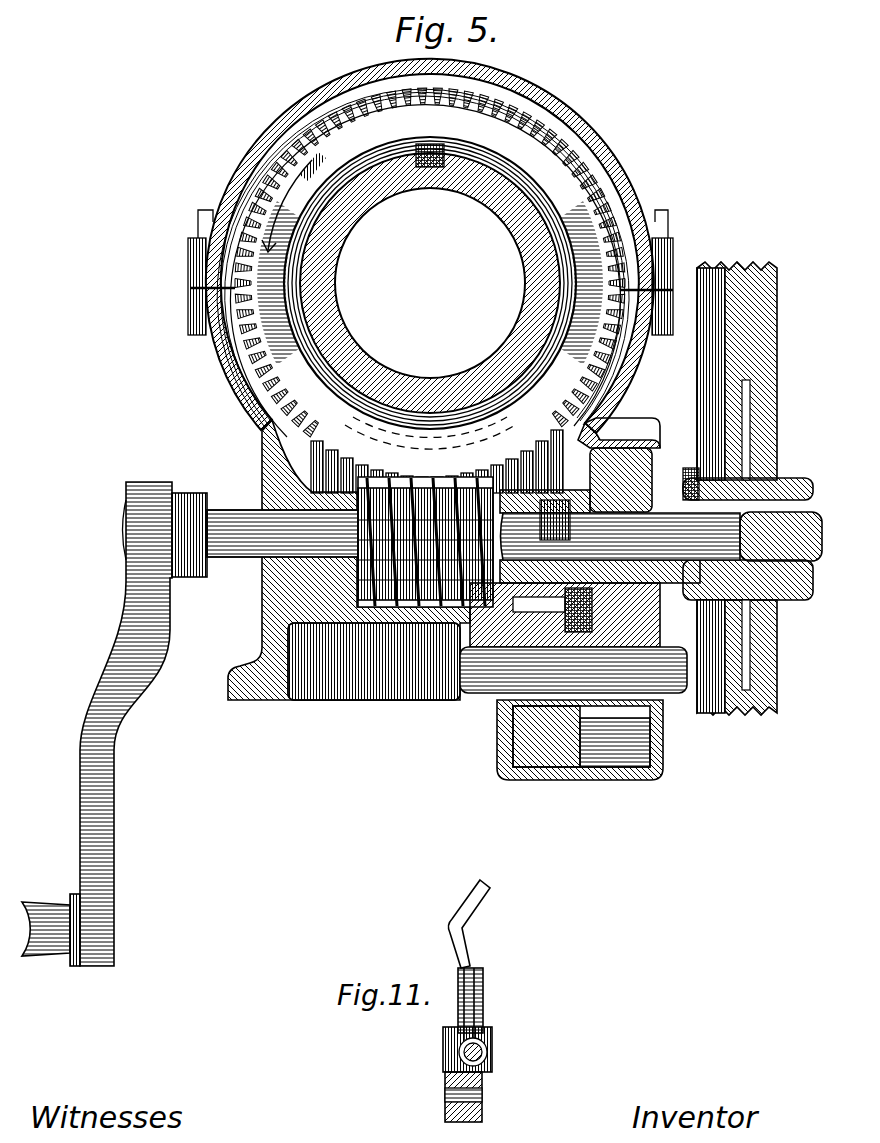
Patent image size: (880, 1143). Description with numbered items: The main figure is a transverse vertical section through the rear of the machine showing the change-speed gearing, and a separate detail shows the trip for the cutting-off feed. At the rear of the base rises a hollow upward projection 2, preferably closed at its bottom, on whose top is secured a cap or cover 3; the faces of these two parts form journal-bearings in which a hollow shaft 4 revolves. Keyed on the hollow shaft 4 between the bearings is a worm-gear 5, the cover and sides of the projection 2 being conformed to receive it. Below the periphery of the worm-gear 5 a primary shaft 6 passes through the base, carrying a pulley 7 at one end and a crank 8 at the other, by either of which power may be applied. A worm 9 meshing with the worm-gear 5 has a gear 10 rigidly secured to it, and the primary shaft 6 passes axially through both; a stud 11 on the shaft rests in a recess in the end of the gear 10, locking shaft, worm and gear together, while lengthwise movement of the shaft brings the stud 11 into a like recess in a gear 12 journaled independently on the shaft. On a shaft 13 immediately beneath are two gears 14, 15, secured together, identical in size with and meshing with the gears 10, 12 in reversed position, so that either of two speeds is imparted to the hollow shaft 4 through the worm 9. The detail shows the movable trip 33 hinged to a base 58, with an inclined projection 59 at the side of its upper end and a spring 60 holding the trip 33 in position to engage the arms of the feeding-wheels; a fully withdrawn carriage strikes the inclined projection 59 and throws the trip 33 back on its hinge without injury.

In FIG. 5, the hollow upward projection 2 is at (262, 590).
In FIG. 5, the cap or cover 3 is at (252, 176).
In FIG. 5, the hollow shaft 4 is at (336, 326).
In FIG. 5, the worm-gear 5 is at (546, 140).
In FIG. 5, the primary shaft 6 is at (240, 508).
In FIG. 5, the pulley 7 is at (778, 449).
In FIG. 5, the crank 8 is at (116, 808).
In FIG. 5, the worm 9 is at (440, 481).
In FIG. 5, the gear 10 is at (606, 435).
In FIG. 5, the stud 11 is at (600, 514).
In FIG. 5, the gear 12 is at (640, 449).
In FIG. 5, the shaft 13 is at (465, 686).
In FIG. 5, the gear 14 is at (508, 786).
In FIG. 5, the gear 15 is at (660, 736).
In FIG. 11, the movable trip 33 is at (476, 951).
In FIG. 11, the base 58 is at (448, 1063).
In FIG. 11, the inclined projection 59 is at (474, 898).
In FIG. 11, the spring 60 is at (485, 1002).